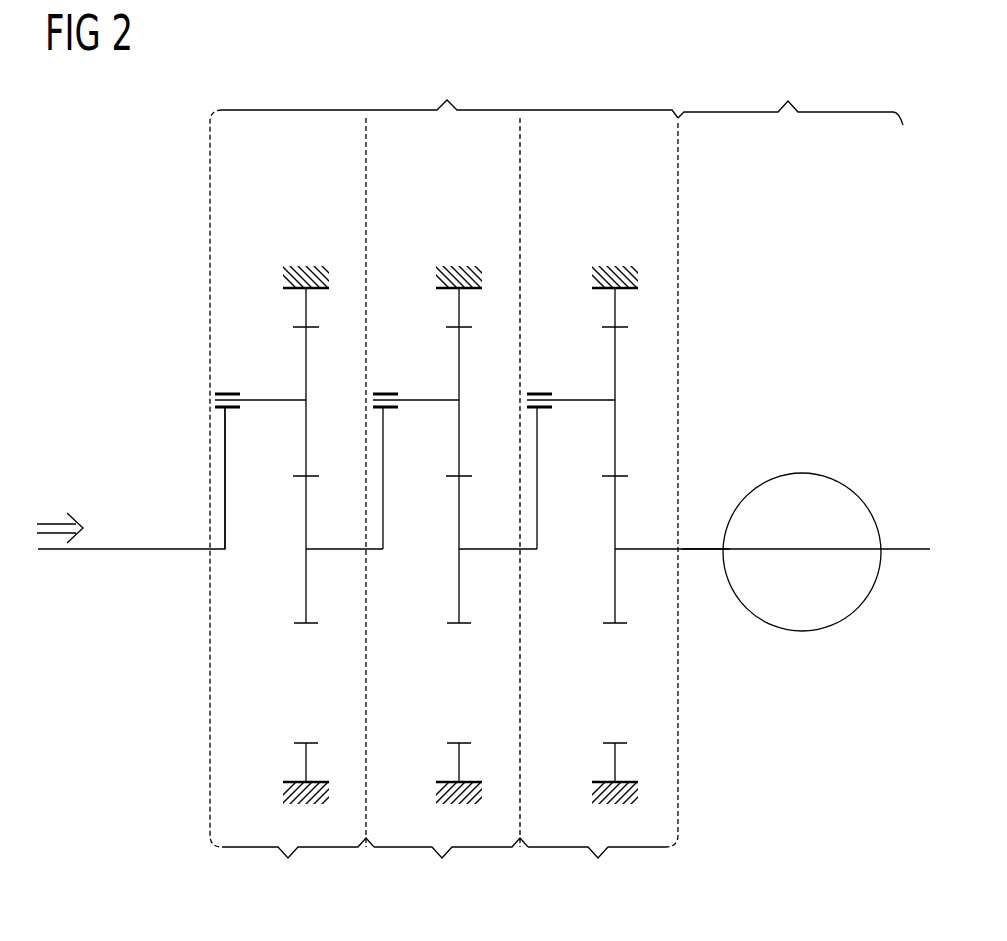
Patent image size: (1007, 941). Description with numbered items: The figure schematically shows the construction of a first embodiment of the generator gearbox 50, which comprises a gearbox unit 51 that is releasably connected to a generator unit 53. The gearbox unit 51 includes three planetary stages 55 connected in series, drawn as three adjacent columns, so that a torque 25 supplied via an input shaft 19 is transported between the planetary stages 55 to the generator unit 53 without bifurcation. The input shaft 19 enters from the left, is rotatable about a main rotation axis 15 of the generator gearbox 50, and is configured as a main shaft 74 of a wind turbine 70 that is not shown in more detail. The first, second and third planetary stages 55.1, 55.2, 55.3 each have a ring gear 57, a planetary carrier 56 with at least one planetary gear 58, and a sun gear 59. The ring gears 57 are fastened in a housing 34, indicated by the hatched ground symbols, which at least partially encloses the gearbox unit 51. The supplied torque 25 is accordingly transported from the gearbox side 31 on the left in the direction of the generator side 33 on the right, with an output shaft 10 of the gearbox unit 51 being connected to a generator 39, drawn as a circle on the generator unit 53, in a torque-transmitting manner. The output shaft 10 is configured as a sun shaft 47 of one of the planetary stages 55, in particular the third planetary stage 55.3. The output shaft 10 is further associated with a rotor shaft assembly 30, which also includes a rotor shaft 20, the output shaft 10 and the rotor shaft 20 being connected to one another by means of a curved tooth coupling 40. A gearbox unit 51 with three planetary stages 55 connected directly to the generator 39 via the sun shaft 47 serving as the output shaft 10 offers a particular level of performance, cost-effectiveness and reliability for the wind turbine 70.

The output shaft 10 is at (768, 613).
The main rotation axis 15 is at (913, 556).
The input shaft 19 is at (484, 478).
The rotor shaft 20 is at (768, 613).
The torque 25 is at (52, 523).
The rotor shaft assembly 30 is at (768, 613).
The gearbox side 31 is at (191, 97).
The generator side 33 is at (938, 100).
The housing 34 is at (307, 264).
The generator 39 is at (802, 472).
The curved tooth coupling 40 is at (768, 613).
The sun shaft 47 is at (703, 553).
The generator gearbox 50 is at (118, 158).
The gearbox unit 51 is at (444, 455).
The generator unit 53 is at (790, 95).
The planetary stages 55 is at (444, 868).
The first planetary stage 55.1 is at (298, 868).
The second planetary stage 55.2 is at (451, 868).
The third planetary stage 55.3 is at (597, 873).
The planetary carrier 56 is at (225, 428).
The ring gear 57 is at (306, 312).
The planetary gear 58 is at (306, 364).
The sun gear 59 is at (306, 525).
The wind turbine 70 is at (118, 205).
The main shaft 74 is at (164, 547).